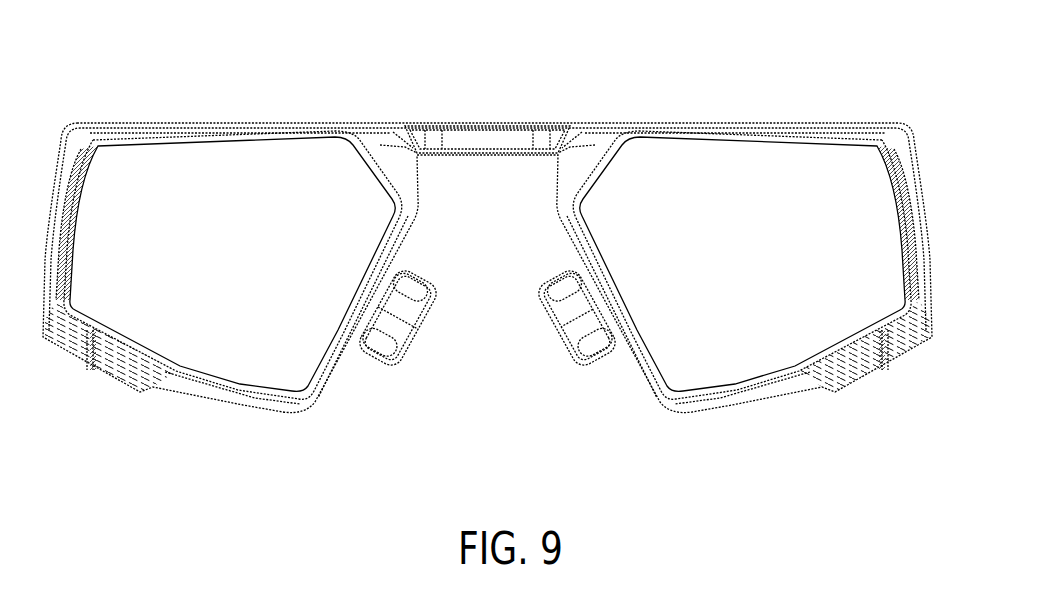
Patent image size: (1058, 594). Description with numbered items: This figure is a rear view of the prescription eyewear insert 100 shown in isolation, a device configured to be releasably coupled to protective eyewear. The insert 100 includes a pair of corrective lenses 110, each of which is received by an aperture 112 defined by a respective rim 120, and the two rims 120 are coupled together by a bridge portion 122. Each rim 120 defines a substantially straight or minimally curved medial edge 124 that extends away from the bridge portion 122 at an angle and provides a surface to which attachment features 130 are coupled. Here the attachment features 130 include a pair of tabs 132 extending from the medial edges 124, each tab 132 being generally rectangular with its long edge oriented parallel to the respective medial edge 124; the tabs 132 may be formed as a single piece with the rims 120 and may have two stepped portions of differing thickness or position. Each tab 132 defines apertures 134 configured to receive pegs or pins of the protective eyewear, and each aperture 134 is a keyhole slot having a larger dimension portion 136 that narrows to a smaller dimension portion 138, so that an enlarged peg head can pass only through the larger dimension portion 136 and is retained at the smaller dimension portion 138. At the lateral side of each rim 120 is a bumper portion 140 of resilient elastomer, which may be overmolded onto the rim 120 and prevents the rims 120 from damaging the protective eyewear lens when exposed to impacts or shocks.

The prescription eyewear insert 100 is at (686, 61).
The corrective lenses 110 is at (188, 268).
The aperture 112 is at (663, 142).
The rim 120 is at (787, 122).
The bridge portion 122 is at (495, 132).
The medial edge 124 is at (320, 363).
The attachment features 130 is at (527, 388).
The tabs 132 is at (550, 308).
The apertures 134 is at (597, 350).
The larger dimension portion 136 is at (407, 273).
The smaller dimension portion 138 is at (423, 297).
The bumper portion 140 is at (893, 335).